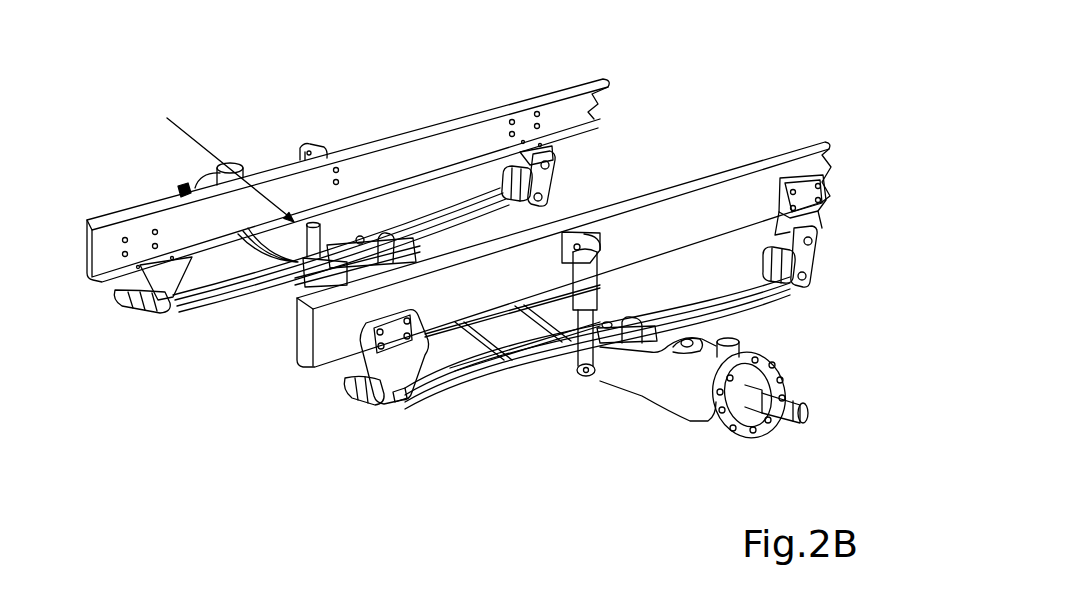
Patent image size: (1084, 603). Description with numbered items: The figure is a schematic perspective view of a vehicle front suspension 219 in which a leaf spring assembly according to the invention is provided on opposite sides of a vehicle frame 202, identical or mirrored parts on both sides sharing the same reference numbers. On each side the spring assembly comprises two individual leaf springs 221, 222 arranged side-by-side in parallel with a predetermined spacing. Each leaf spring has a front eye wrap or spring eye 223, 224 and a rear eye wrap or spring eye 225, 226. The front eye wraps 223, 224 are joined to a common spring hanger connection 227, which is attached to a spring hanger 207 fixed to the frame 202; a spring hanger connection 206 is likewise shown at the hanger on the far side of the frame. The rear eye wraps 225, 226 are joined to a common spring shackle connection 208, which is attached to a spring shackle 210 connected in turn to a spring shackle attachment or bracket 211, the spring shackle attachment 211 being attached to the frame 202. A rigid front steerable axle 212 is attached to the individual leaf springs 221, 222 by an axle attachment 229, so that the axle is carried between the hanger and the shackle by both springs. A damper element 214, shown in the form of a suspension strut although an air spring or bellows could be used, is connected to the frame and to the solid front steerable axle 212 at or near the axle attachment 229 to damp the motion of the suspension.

The vehicle frame 202 is at (573, 83).
The spring hanger connection 206 is at (162, 304).
The spring hanger 207 is at (114, 290).
The spring shackle connection 208 is at (549, 196).
The spring shackle 210 is at (549, 182).
The spring shackle attachment 211 is at (530, 150).
The rigid front steerable axle 212 is at (763, 426).
The damper element 214 is at (308, 143).
The vehicle front suspension 219 is at (220, 157).
The leaf spring 221 is at (447, 213).
The leaf spring 222 is at (477, 218).
The front eye wrap 223 is at (126, 302).
The front eye wrap 224 is at (147, 306).
The rear eye wrap 225 is at (530, 168).
The rear eye wrap 226 is at (546, 160).
The common spring hanger connection 227 is at (397, 400).
The axle attachment 229 is at (366, 233).